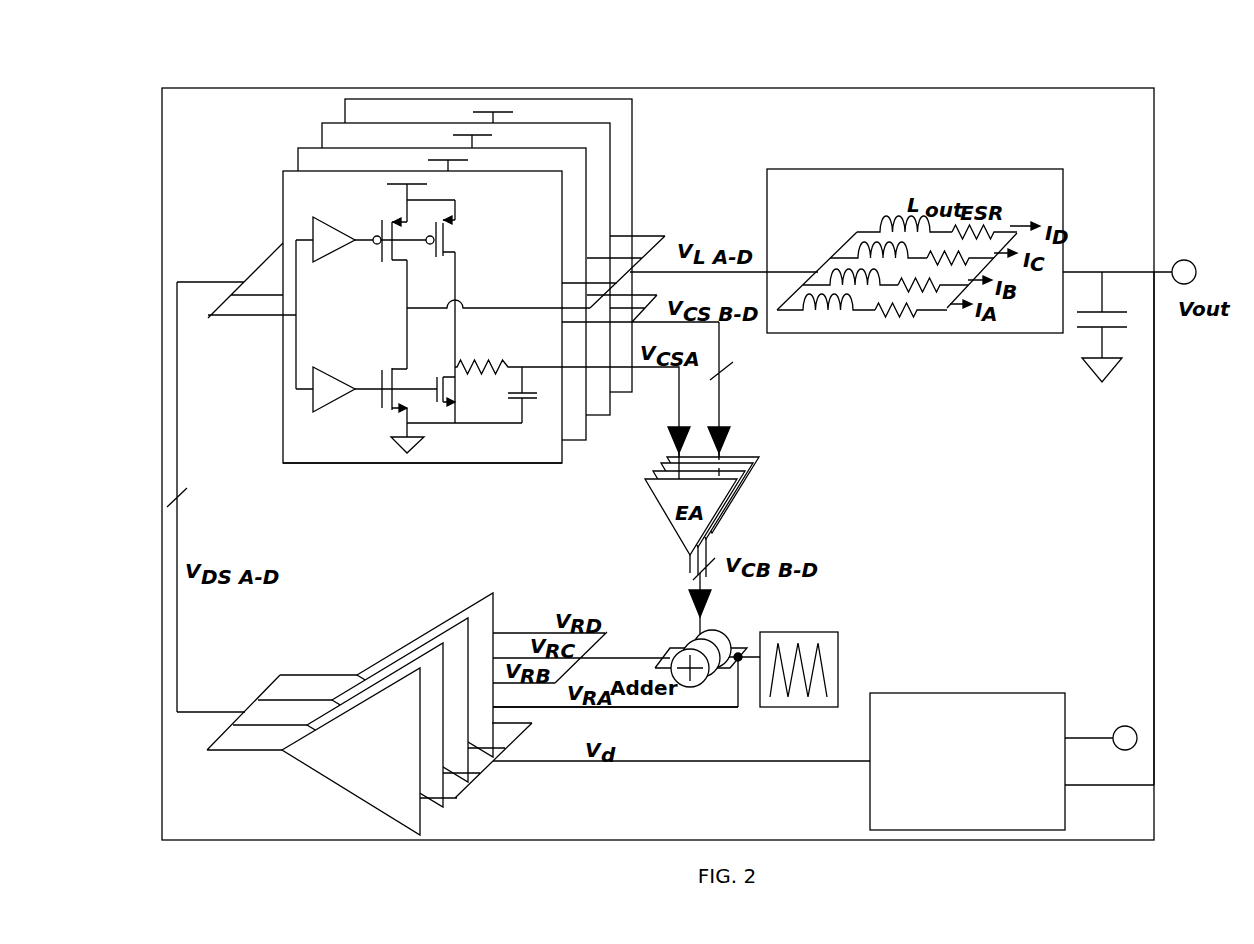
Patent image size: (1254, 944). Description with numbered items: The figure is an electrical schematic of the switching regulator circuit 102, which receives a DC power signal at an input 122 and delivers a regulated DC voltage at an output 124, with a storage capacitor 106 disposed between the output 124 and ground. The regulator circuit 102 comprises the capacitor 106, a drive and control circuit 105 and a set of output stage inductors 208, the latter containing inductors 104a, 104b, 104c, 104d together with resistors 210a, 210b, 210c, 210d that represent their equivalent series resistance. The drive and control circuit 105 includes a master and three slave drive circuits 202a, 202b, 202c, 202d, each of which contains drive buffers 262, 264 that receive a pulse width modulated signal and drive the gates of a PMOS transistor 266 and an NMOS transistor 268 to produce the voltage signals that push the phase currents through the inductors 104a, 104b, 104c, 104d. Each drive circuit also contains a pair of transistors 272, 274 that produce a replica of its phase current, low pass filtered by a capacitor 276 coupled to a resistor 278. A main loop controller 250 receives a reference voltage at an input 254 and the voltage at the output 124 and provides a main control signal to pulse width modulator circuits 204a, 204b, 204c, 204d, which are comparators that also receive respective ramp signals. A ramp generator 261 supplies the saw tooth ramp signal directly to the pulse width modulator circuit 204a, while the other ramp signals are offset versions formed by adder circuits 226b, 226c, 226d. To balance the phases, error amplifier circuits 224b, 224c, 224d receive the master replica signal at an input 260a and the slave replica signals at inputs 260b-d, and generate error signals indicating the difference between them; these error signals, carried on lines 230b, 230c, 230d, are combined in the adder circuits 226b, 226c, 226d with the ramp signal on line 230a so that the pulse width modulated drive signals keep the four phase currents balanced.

The regulator circuit 102 is at (690, 84).
The input 122 is at (398, 183).
The drive circuit 202a is at (283, 201).
The drive circuit 202b is at (298, 160).
The drive circuit 202c is at (322, 135).
The drive circuit 202d is at (345, 112).
The drive buffer 262 is at (329, 221).
The drive buffer 264 is at (329, 370).
The transistor 266 is at (383, 262).
The transistor 268 is at (385, 368).
The transistor 272 is at (452, 240).
The transistor 274 is at (437, 378).
The resistor 278 is at (494, 362).
The capacitor 276 is at (528, 405).
The drive and control circuit 105 is at (396, 484).
The set of output stage inductors 208 is at (828, 170).
The inductor 104a is at (815, 312).
The inductor 104b is at (830, 270).
The inductor 104c is at (858, 240).
The inductor 104d is at (883, 218).
The resistor 210a is at (893, 312).
The resistor 210b is at (920, 287).
The resistor 210c is at (940, 257).
The resistor 210d is at (990, 228).
The output 124 is at (1112, 272).
The capacitor 106 is at (1085, 328).
The error amplifier circuit 224b is at (656, 492).
The error amplifier circuit 224c is at (662, 466).
The error amplifier circuit 224d is at (742, 458).
The ramp signal line 230a is at (633, 708).
The current balance signal line 230b is at (690, 568).
The current balance signal line 230c is at (690, 557).
The current balance signal line 230d is at (712, 547).
The adder circuit 226b is at (700, 688).
The adder circuit 226c is at (723, 640).
The adder circuit 226d is at (713, 632).
The ramp generator 261 is at (840, 653).
The main loop controller 250 is at (977, 695).
The input 254 is at (1080, 735).
The pulse width modulator circuit 204a is at (323, 780).
The pulse width modulator circuit 204b is at (378, 673).
The pulse width modulator circuit 204c is at (410, 648).
The pulse width modulator circuit 204d is at (440, 625).
The input 260a is at (682, 402).
The inputs 260b-d is at (722, 382).